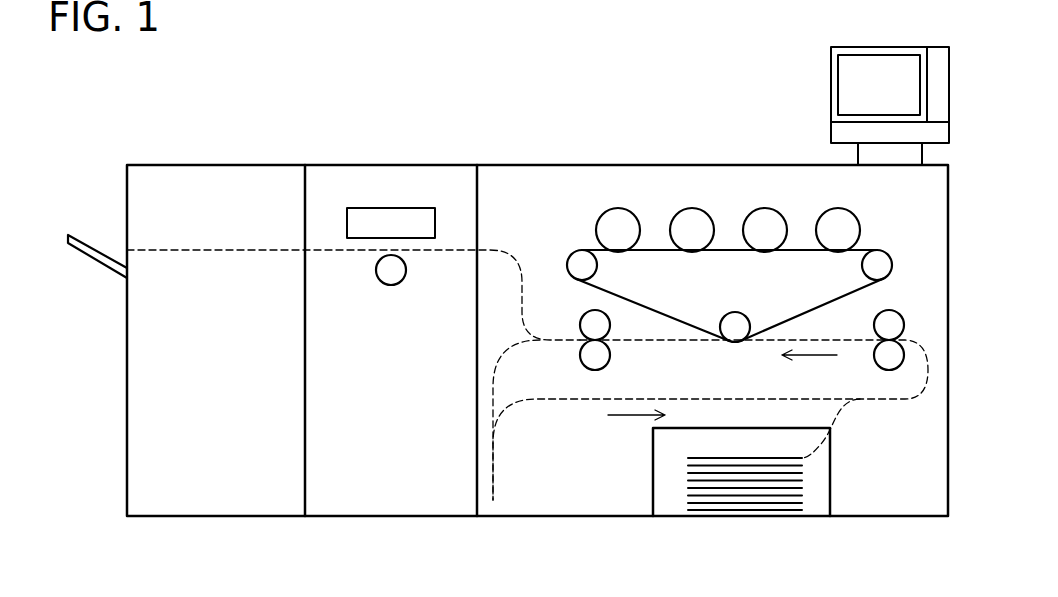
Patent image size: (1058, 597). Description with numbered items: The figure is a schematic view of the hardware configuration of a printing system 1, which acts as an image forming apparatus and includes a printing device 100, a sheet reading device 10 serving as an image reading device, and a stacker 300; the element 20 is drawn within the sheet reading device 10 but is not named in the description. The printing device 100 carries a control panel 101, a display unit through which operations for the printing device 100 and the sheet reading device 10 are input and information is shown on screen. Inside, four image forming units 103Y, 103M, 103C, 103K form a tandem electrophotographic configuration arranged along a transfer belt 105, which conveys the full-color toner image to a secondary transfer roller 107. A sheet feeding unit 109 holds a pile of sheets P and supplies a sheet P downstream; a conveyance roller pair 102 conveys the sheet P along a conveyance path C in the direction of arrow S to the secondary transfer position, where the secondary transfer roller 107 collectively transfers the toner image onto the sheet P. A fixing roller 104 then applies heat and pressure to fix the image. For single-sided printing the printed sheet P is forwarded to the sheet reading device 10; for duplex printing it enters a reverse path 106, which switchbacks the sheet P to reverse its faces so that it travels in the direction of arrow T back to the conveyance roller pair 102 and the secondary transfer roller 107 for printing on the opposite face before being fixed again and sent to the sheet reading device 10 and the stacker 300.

The printing system 1 is at (348, 85).
The sheet reading device 10 is at (381, 518).
The reading unit roller 20 is at (391, 285).
The stacker 300 is at (226, 164).
The printing device 100 is at (660, 164).
The control panel 101 is at (831, 85).
The conveyance roller pair 102 is at (908, 317).
The image forming unit 103K is at (626, 207).
The image forming unit 103C is at (700, 207).
The image forming unit 103M is at (774, 207).
The image forming unit 103Y is at (847, 207).
The fixing roller 104 is at (580, 323).
The transfer belt 105 is at (663, 311).
The reverse path 106 is at (493, 473).
The secondary transfer roller 107 is at (750, 311).
The sheet feeding unit 109 is at (652, 462).
The sheet P is at (742, 497).
The conveyance path C is at (887, 402).
The arrow S is at (809, 367).
The arrow T is at (636, 426).